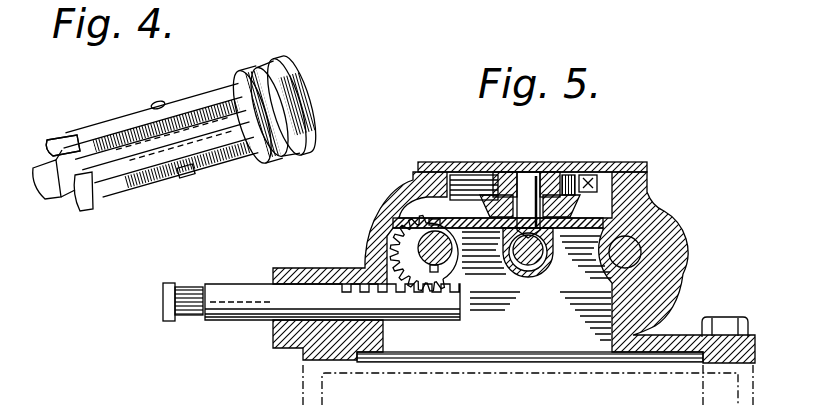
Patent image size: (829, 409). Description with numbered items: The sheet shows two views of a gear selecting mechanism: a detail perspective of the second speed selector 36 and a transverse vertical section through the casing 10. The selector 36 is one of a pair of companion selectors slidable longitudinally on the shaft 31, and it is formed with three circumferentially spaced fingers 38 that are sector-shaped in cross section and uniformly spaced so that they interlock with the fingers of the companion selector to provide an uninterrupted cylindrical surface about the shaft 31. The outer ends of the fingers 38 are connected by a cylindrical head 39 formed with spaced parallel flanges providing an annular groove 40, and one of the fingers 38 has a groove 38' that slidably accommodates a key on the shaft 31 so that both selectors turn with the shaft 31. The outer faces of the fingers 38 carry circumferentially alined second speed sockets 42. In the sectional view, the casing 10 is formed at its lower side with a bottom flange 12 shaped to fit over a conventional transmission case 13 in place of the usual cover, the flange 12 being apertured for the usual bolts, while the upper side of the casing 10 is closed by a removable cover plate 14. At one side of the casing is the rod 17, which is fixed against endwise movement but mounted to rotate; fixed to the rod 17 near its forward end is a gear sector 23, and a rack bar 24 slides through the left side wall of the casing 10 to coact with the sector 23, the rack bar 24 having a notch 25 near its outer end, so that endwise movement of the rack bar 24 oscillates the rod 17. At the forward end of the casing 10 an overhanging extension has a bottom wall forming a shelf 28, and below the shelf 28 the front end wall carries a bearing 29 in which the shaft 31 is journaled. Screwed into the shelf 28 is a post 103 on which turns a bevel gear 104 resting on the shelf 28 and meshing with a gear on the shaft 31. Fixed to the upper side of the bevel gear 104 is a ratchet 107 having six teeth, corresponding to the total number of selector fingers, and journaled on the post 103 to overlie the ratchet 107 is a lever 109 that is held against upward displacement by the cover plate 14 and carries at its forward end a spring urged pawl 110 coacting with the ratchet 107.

In FIG. 5, the casing 10 is at (657, 231).
In FIG. 5, the bottom flange 12 is at (724, 338).
In FIG. 5, the transmission case 13 is at (302, 405).
In FIG. 5, the cover plate 14 is at (593, 165).
In FIG. 5, the rod 17 is at (450, 252).
In FIG. 5, the gear sector 23 is at (430, 272).
In FIG. 5, the rack bar 24 is at (234, 285).
In FIG. 5, the notch 25 is at (189, 286).
In FIG. 5, the shelf 28 is at (583, 228).
In FIG. 5, the bearing 29 is at (518, 277).
In FIG. 5, the shaft 31 is at (534, 275).
In FIG. 4, the selector 36 is at (303, 75).
In FIG. 4, the fingers 38 is at (146, 134).
In FIG. 4, the groove 38' is at (48, 125).
In FIG. 4, the cylindrical head 39 is at (294, 102).
In FIG. 4, the annular groove 40 is at (322, 121).
In FIG. 4, the second speed sockets 42 is at (152, 103).
In FIG. 5, the post 103 is at (537, 168).
In FIG. 5, the bevel gear 104 is at (495, 186).
In FIG. 5, the ratchet 107 is at (490, 182).
In FIG. 5, the lever 109 is at (508, 166).
In FIG. 5, the pawl 110 is at (590, 182).